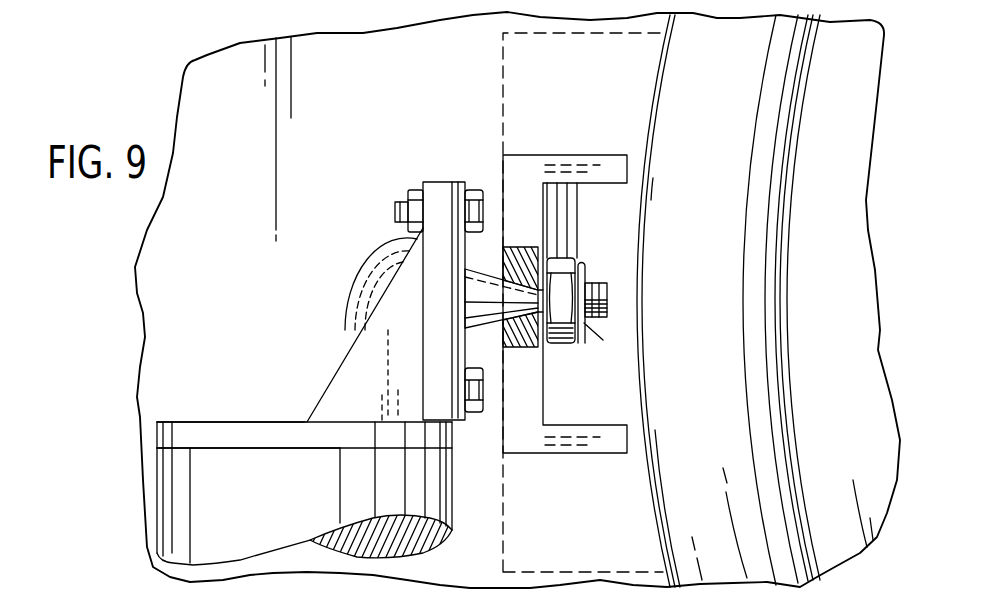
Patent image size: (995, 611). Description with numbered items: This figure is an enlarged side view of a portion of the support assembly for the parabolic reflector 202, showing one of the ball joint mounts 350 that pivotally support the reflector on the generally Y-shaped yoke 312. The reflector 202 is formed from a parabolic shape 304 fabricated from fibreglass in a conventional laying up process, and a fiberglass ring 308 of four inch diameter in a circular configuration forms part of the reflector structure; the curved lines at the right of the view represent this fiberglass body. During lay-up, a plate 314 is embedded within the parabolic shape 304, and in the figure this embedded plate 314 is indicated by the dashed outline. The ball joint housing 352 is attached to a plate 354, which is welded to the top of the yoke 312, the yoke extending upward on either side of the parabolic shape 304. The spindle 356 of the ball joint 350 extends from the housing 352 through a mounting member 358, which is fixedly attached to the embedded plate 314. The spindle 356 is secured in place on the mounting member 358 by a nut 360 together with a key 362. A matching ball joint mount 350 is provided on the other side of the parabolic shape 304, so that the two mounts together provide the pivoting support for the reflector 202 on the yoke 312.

The parabolic reflector 202 is at (125, 238).
The parabolic shape 304 is at (253, 228).
The ring 308 is at (728, 289).
The yoke 312 is at (296, 491).
The plate 314 is at (500, 111).
The ball joint mount 350 is at (362, 204).
The ball joint housing 352 is at (330, 384).
The plate 354 is at (217, 420).
The spindle 356 is at (488, 328).
The mounting member 358 is at (525, 168).
The nut 360 is at (565, 266).
The key 362 is at (586, 260).